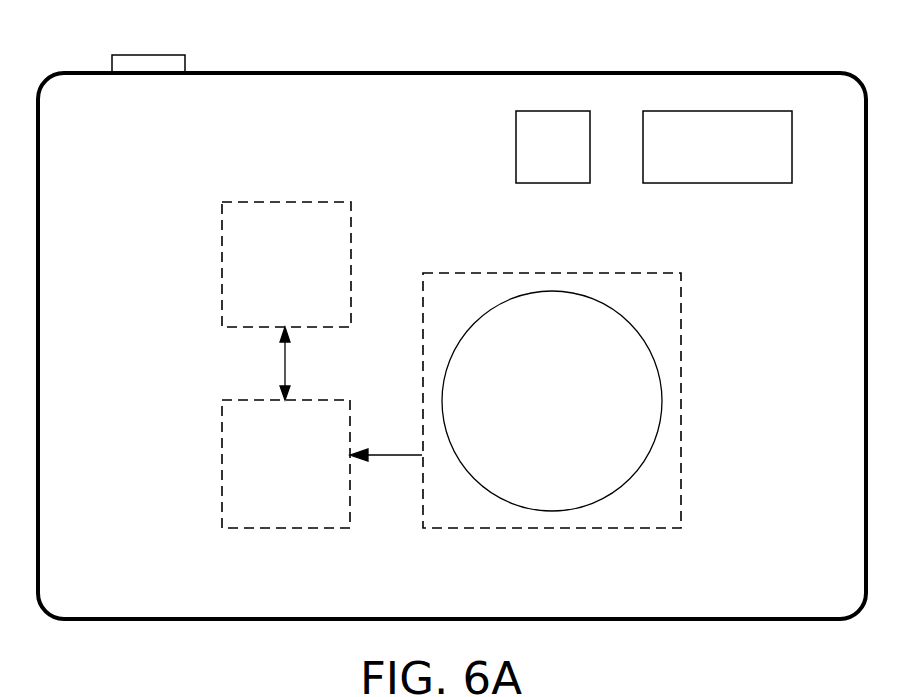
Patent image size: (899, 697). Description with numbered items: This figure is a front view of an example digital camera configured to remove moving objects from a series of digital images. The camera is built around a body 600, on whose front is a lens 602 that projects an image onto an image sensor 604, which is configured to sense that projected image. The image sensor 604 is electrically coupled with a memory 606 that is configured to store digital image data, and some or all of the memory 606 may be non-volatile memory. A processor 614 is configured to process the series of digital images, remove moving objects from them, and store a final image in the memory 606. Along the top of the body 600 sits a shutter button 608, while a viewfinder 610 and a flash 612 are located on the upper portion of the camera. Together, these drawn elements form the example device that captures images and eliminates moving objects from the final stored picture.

The body 600 is at (452, 346).
The lens 602 is at (552, 401).
The image sensor 604 is at (682, 347).
The memory 606 is at (286, 464).
The shutter button 608 is at (133, 55).
The viewfinder 610 is at (553, 147).
The flash 612 is at (717, 147).
The processor 614 is at (286, 264).